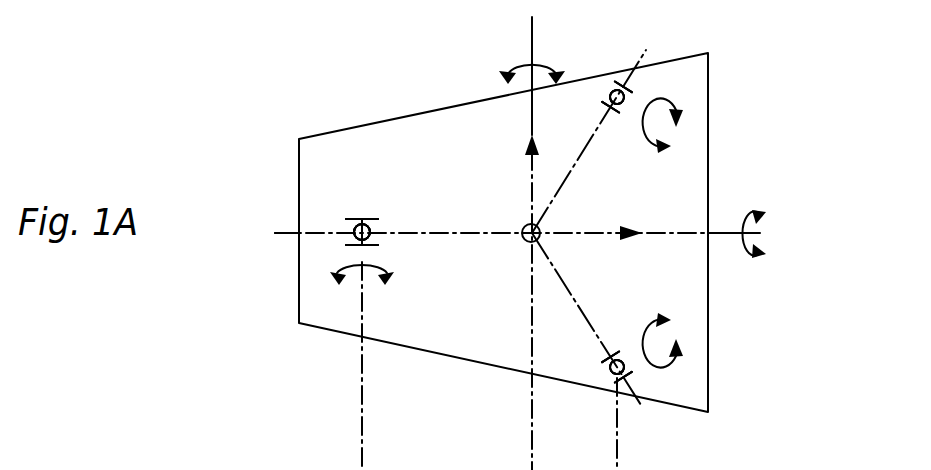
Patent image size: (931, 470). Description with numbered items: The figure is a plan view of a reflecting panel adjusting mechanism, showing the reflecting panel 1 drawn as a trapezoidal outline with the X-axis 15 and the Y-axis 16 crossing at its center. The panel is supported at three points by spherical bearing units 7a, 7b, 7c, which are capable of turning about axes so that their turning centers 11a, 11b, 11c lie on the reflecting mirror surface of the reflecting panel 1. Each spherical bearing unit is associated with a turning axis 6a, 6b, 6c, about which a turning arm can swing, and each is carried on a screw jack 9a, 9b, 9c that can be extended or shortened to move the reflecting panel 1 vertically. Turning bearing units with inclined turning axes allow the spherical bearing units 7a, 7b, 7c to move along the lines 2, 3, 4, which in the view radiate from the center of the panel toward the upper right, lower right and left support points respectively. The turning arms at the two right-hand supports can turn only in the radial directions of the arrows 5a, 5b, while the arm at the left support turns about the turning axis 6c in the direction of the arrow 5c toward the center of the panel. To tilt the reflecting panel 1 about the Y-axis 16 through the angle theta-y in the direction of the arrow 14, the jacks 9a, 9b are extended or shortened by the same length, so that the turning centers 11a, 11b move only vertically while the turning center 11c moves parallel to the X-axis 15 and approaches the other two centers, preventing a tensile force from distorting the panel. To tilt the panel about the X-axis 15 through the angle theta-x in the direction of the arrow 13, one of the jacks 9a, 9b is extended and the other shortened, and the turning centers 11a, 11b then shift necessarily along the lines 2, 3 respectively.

The reflecting panel 1 is at (708, 69).
The line 2 is at (646, 52).
The line 3 is at (633, 393).
The line 4 is at (275, 233).
The arrow 5a is at (670, 364).
The arrow 5b is at (676, 100).
The arrow 5c is at (330, 279).
The turning axis 6a is at (660, 346).
The turning axis 6b is at (657, 122).
The turning axis 6c is at (362, 214).
The spherical bearing unit 7a is at (628, 378).
The spherical bearing unit 7b is at (627, 92).
The spherical bearing unit 7c is at (346, 246).
The jack 9a is at (703, 394).
The jack 9b is at (680, 66).
The jack 9c is at (287, 271).
The turning center 11a is at (728, 394).
The turning center 11b is at (705, 66).
The turning center 11c is at (261, 271).
The arrow 13 is at (748, 256).
The arrow 14 is at (548, 56).
The X-axis 15 is at (760, 233).
The Y-axis 16 is at (530, 17).